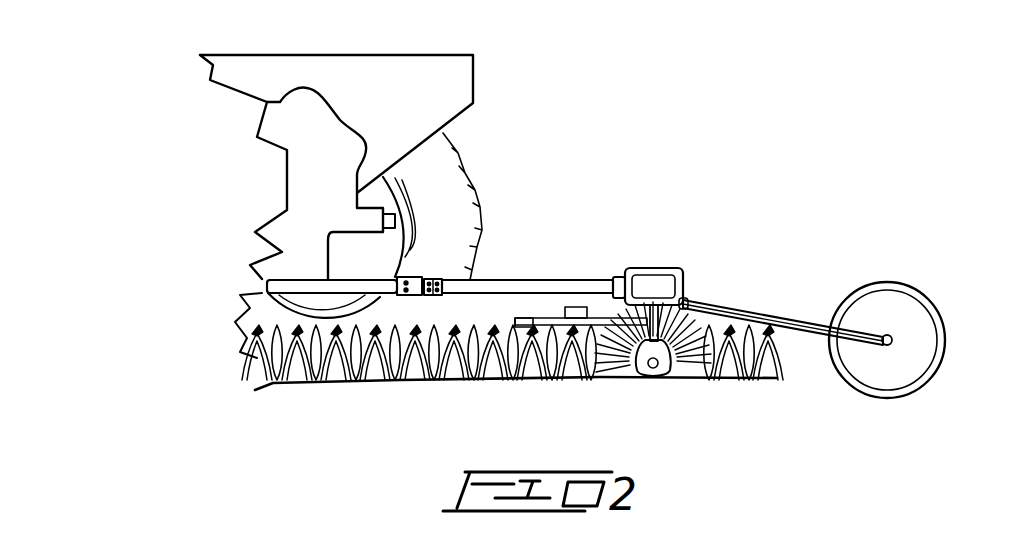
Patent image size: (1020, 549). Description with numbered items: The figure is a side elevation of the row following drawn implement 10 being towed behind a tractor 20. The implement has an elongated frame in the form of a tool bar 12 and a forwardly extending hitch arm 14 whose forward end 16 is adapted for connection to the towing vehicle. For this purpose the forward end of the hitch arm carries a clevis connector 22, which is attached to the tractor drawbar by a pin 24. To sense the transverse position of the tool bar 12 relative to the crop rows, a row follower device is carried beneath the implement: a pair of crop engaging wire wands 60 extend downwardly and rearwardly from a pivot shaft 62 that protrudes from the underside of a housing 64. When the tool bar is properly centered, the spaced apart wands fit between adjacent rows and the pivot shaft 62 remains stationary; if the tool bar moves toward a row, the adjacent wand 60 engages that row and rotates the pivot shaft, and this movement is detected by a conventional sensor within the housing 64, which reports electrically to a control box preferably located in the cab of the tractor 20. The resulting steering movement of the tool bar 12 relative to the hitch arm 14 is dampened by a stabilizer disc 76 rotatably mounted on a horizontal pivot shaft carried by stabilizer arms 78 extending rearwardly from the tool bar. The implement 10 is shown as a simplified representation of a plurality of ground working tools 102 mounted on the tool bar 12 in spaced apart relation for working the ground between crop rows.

The row following drawn implement 10 is at (780, 178).
The tool bar 12 is at (683, 273).
The hitch arm 14 is at (588, 280).
The forward end of hitch arm 16 is at (402, 276).
The tractor 20 is at (457, 70).
The clevis connector 22 is at (443, 276).
The pin 24 is at (420, 277).
The crop engaging wire wands 60 is at (568, 376).
The pivot shaft 62 is at (505, 379).
The housing 64 is at (518, 316).
The stabilizer disc 76 is at (892, 307).
The stabilizer arms 78 is at (792, 319).
The ground working tools 102 is at (656, 379).